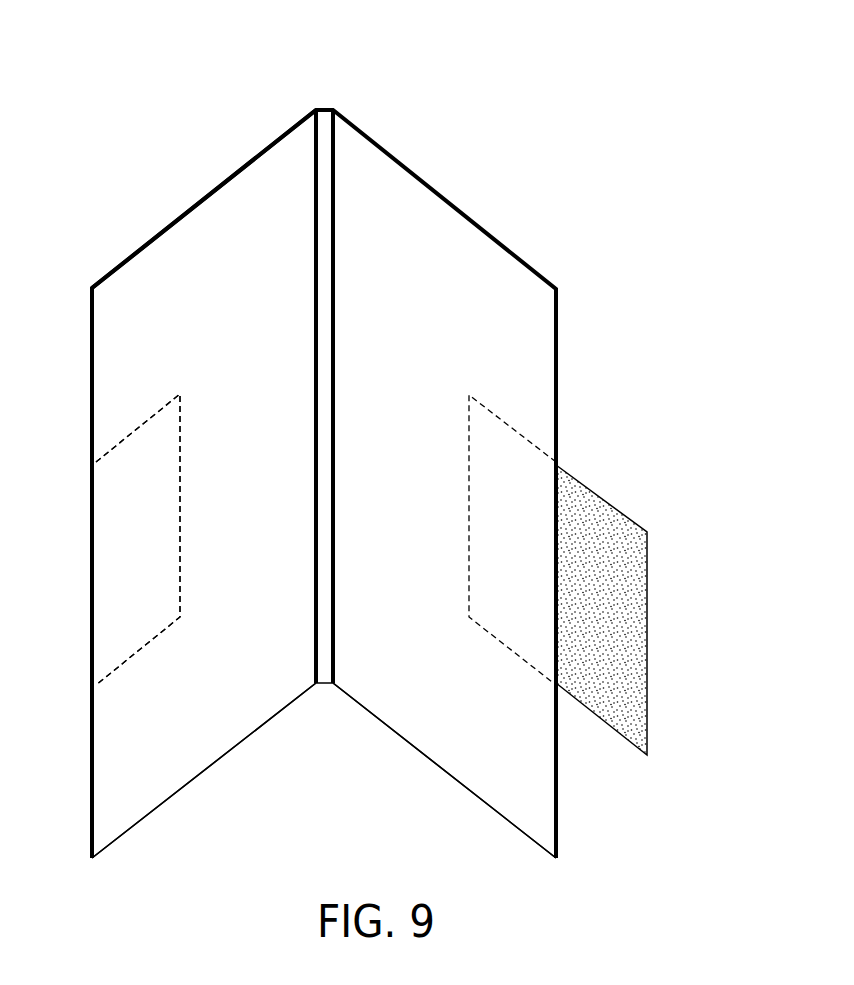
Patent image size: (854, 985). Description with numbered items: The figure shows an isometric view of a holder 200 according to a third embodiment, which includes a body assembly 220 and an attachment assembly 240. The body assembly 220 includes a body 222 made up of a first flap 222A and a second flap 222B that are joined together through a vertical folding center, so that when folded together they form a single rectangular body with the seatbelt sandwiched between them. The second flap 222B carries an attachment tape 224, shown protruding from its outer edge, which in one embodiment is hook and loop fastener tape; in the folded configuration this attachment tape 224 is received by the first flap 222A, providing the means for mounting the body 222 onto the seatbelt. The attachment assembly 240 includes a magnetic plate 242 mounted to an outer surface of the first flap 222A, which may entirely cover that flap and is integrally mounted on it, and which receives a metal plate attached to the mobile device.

The holder 200 is at (164, 42).
The body assembly 220 is at (228, 170).
The body 222 is at (137, 250).
The first flap 222A is at (214, 733).
The second flap 222B is at (435, 745).
The attachment tape 224 is at (628, 612).
The attachment assembly 240 is at (128, 420).
The magnetic plate 242 is at (117, 558).